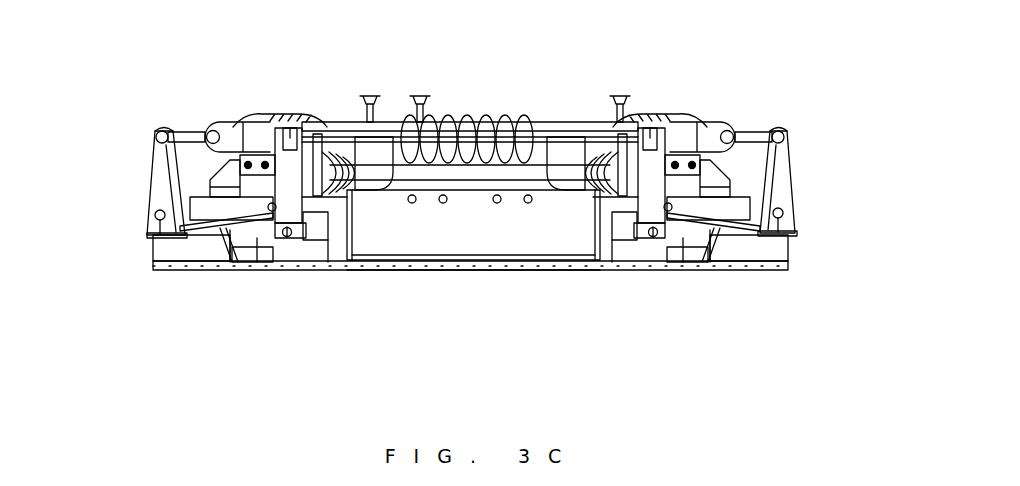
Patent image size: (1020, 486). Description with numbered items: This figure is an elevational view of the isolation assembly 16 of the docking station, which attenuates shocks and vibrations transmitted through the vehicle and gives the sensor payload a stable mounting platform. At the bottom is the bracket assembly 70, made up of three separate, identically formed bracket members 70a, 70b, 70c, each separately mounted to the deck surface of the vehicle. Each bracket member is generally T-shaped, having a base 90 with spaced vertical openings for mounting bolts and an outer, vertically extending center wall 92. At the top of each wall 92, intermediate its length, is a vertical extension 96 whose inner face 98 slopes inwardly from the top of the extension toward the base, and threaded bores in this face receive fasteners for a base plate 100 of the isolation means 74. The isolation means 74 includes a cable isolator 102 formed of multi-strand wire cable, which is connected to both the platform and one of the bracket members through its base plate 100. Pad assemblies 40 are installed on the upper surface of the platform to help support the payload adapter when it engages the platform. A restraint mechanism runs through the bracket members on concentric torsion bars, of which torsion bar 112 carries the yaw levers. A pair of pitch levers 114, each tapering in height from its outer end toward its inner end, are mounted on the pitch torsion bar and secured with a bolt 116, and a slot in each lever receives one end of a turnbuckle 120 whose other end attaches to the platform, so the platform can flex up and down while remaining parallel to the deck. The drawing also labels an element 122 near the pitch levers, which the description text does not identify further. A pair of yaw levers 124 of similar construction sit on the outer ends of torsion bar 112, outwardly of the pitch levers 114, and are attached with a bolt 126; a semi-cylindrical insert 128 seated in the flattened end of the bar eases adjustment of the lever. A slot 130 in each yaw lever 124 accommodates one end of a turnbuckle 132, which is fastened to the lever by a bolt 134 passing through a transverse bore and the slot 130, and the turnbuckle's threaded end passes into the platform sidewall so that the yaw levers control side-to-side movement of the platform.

The isolation assembly 16 is at (126, 78).
The pad assemblies 40 is at (371, 96).
The bracket assembly 70 is at (447, 292).
The bracket member 70a is at (792, 274).
The bracket member 70b is at (151, 269).
The bracket member 70c is at (488, 276).
The isolation means 74 is at (499, 110).
The base 90 is at (233, 272).
The center wall 92 is at (257, 254).
The vertical extension 96 is at (153, 178).
The inner face 98 is at (168, 197).
The base plate 100 is at (244, 124).
The cable isolator 102 is at (262, 112).
The torsion bar 112 is at (155, 216).
The pitch lever 114 is at (205, 238).
The bolt 116 is at (592, 206).
The turnbuckle 120 is at (395, 200).
The mounting plate 122 is at (268, 207).
The yaw lever 124 is at (150, 168).
The bolt 126 is at (168, 241).
The semi-cylindrical insert 128 is at (150, 239).
The slot 130 is at (170, 148).
The turnbuckle 132 is at (187, 130).
The bolt 134 is at (157, 136).